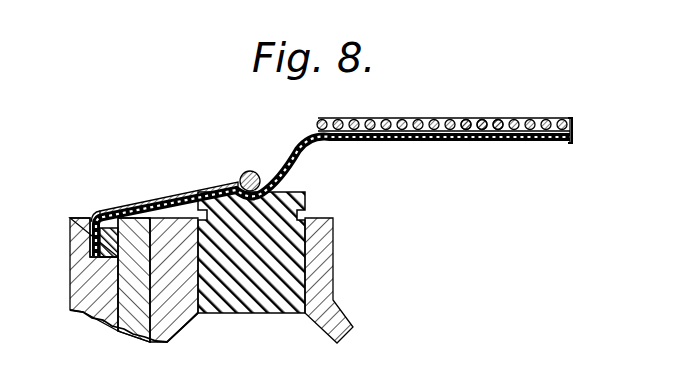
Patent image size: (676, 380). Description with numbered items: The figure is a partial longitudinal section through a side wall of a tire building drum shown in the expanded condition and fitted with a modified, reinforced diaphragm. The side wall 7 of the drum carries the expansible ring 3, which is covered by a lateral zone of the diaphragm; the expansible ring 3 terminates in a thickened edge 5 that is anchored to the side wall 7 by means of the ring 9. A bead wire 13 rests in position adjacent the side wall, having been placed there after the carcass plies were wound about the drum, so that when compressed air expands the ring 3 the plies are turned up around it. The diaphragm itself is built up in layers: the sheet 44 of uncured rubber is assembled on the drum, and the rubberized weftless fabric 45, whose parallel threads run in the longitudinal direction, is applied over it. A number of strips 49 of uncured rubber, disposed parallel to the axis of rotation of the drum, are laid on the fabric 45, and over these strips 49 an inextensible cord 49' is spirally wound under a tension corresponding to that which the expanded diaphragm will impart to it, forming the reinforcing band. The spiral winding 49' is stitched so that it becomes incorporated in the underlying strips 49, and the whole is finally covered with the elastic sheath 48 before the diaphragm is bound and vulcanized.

The expansible ring 3 is at (263, 301).
The thickened edge 5 is at (95, 249).
The side wall 7 is at (162, 219).
The ring 9 is at (69, 233).
The bead wire 13 is at (261, 170).
The sheet of uncured rubber 44 is at (497, 146).
The rubberized weftless fabric 45 is at (573, 130).
The elastic sheath 48 is at (200, 178).
The strips of uncured rubber 49 is at (445, 105).
The inextensible cord 49' is at (484, 105).